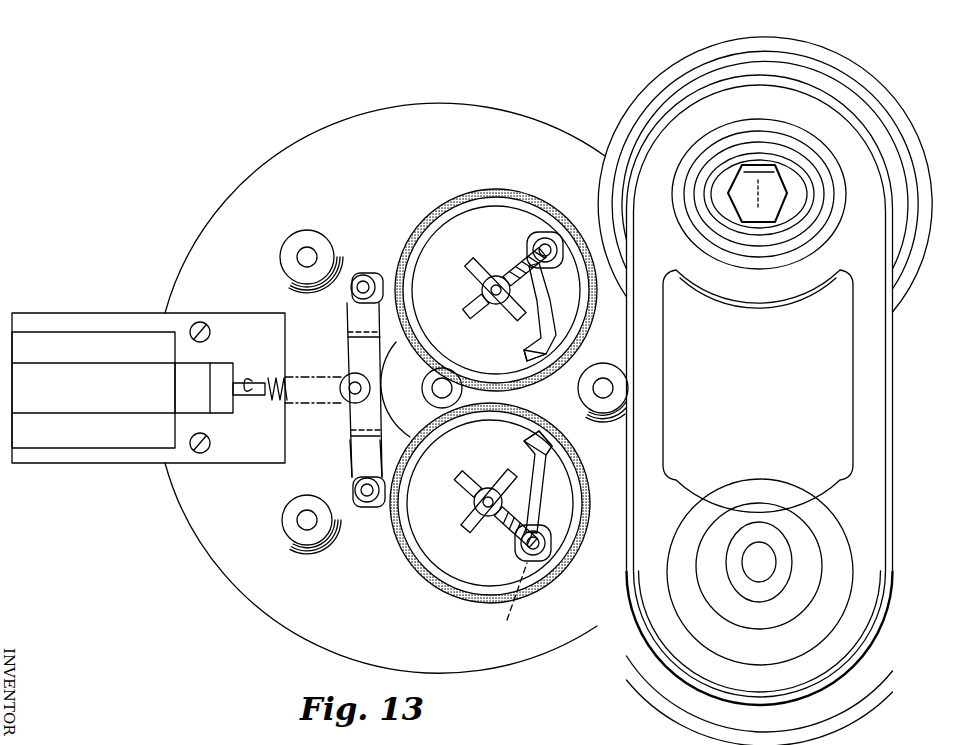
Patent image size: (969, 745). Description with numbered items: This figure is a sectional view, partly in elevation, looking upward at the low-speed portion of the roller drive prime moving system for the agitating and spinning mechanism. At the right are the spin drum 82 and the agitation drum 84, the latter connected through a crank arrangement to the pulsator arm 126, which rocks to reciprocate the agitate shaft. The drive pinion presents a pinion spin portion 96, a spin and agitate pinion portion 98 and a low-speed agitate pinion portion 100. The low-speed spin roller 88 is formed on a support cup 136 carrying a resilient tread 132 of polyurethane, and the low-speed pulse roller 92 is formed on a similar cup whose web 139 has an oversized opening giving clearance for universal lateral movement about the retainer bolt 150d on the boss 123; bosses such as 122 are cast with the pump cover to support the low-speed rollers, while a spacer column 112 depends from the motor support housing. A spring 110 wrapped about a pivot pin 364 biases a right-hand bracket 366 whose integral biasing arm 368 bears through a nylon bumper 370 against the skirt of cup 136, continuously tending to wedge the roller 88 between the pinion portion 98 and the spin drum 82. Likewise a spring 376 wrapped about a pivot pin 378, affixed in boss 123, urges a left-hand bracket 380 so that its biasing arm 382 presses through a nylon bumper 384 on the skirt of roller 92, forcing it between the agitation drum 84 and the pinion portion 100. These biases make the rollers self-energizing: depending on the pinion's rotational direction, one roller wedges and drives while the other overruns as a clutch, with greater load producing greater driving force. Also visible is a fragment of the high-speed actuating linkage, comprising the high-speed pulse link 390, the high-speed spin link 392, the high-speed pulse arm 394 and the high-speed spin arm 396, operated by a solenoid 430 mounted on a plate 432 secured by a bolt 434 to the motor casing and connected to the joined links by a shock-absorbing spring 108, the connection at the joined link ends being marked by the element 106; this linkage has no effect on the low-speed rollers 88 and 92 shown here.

The spin drum 82 is at (637, 692).
The agitation drum 84 is at (677, 62).
The low-speed spin roller 88 is at (457, 593).
The low-speed pulse roller 92 is at (427, 227).
The pinion spin portion 96 is at (392, 342).
The spin and agitate pinion portion 98 is at (428, 385).
The low-speed agitate pinion portion 100 is at (440, 392).
The pin 106 is at (355, 396).
The spring 108 is at (338, 398).
The spring 110 is at (513, 600).
The spacer column 112 is at (302, 232).
The boss 122 is at (477, 527).
The boss 123 is at (470, 262).
The pulsator arm 126 is at (893, 398).
The resilient tread 132 is at (503, 190).
The support cup 136 is at (477, 418).
The web 139 is at (483, 502).
The retainer bolt 150d is at (490, 290).
The pivot pin 364 is at (540, 557).
The right-hand bracket 366 is at (517, 538).
The biasing arm 368 is at (540, 503).
The nylon bumper 370 is at (547, 450).
The spring 376 is at (521, 264).
The pivot pin 378 is at (549, 250).
The left-hand bracket 380 is at (523, 252).
The biasing arm 382 is at (547, 307).
The nylon bumper 384 is at (530, 357).
The high-speed pulse link 390 is at (348, 322).
The high-speed spin link 392 is at (347, 443).
The high-speed pulse arm 394 is at (377, 273).
The high-speed spin arm 396 is at (380, 510).
The solenoid 430 is at (95, 343).
The plate 432 is at (242, 443).
The bolt 434 is at (205, 325).